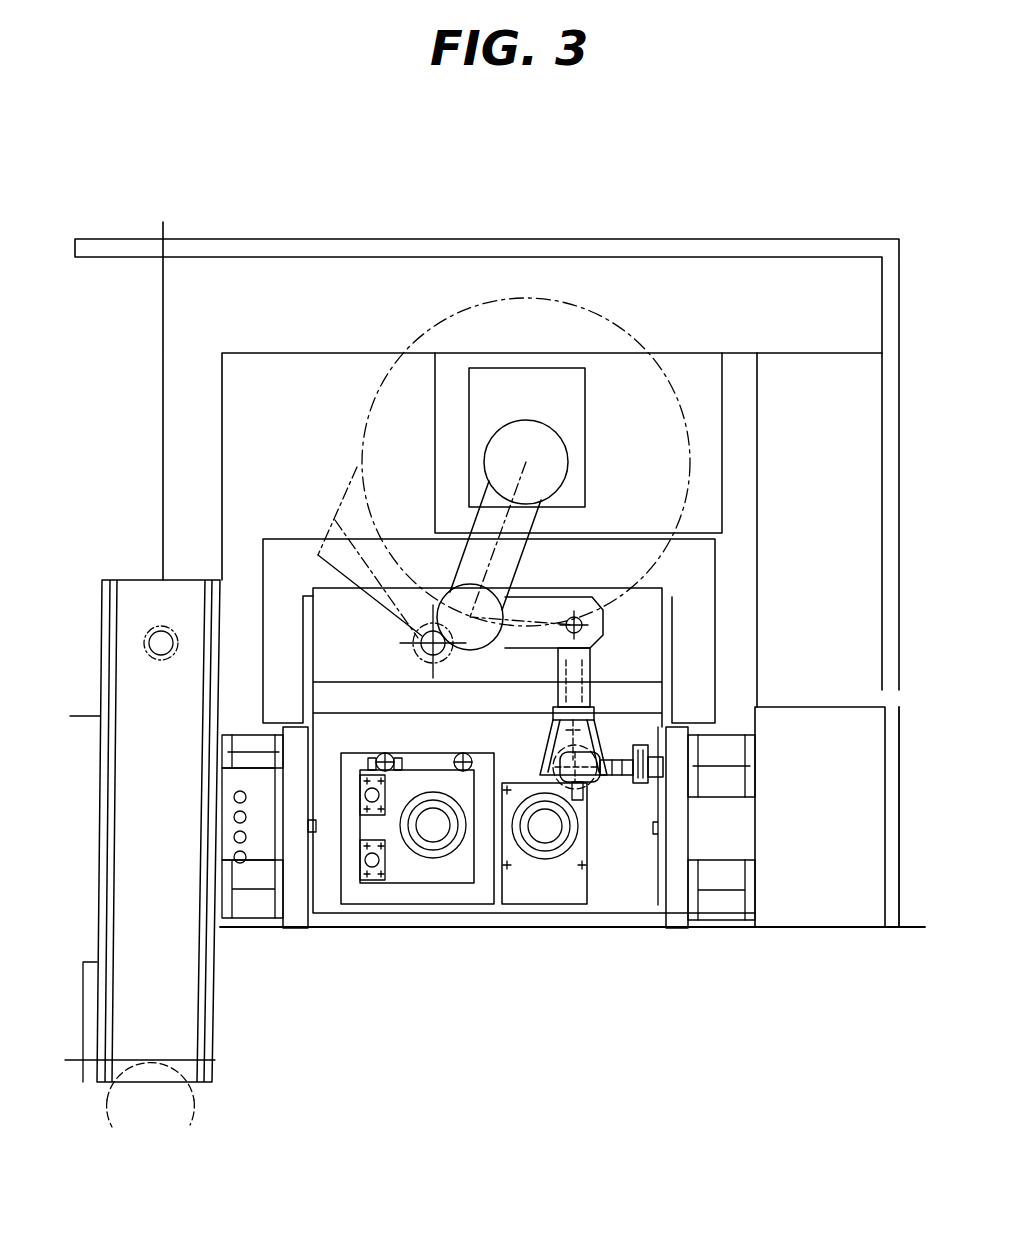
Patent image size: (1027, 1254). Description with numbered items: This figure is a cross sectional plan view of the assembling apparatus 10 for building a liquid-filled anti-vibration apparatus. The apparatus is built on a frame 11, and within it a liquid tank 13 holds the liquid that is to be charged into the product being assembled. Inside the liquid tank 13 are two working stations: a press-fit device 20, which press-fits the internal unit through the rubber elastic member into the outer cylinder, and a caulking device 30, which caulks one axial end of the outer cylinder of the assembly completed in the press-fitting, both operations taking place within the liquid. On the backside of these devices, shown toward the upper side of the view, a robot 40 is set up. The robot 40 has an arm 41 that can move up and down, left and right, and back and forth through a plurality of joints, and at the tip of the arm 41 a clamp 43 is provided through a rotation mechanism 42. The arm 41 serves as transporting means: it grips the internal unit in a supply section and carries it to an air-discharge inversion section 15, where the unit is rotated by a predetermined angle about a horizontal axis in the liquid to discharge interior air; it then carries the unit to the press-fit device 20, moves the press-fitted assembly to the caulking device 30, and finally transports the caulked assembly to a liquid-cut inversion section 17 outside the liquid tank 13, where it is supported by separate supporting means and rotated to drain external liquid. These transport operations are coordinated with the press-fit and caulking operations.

The assembling apparatus 10 is at (532, 169).
The frame 11 is at (720, 890).
The liquid tank 13 is at (640, 900).
The air-discharge inversion section 15 is at (632, 784).
The liquid-cut inversion section 17 is at (412, 636).
The press-fit device 20 is at (535, 881).
The caulking device 30 is at (416, 876).
The robot 40 is at (483, 397).
The arm 41 is at (475, 568).
The rotation mechanism 42 is at (585, 695).
The clamp 43 is at (612, 736).